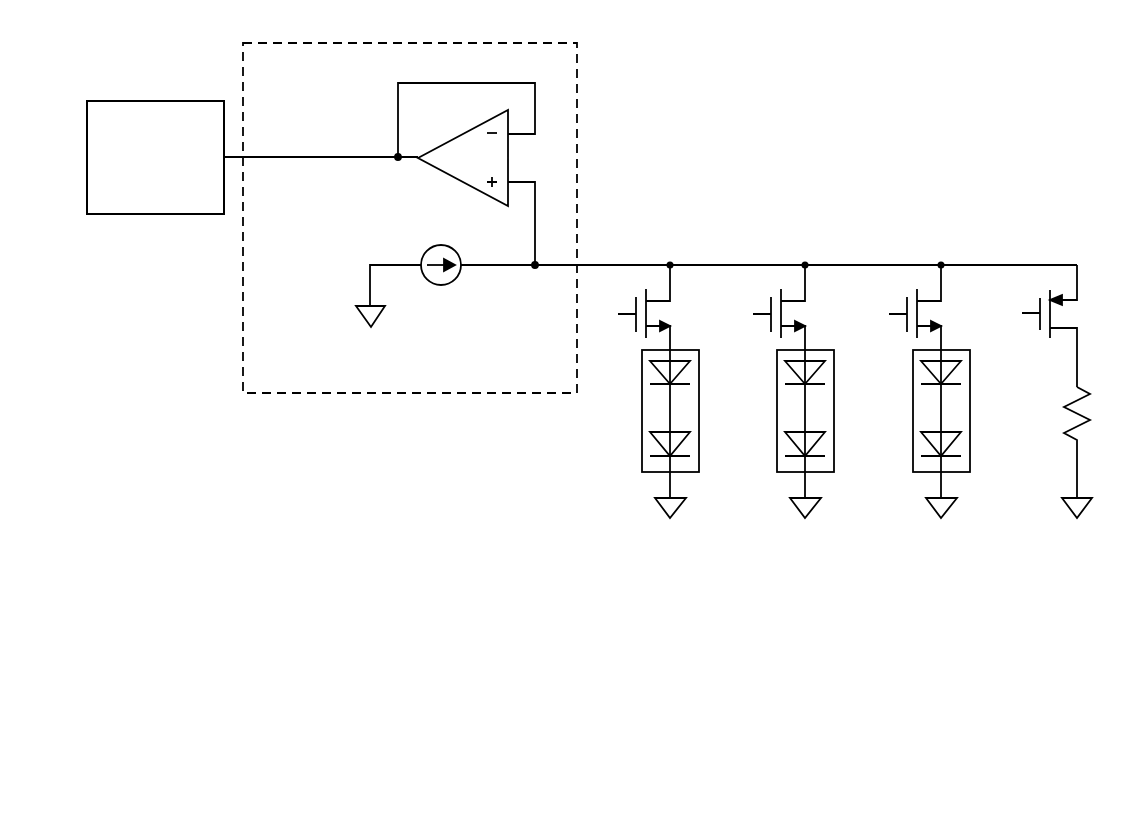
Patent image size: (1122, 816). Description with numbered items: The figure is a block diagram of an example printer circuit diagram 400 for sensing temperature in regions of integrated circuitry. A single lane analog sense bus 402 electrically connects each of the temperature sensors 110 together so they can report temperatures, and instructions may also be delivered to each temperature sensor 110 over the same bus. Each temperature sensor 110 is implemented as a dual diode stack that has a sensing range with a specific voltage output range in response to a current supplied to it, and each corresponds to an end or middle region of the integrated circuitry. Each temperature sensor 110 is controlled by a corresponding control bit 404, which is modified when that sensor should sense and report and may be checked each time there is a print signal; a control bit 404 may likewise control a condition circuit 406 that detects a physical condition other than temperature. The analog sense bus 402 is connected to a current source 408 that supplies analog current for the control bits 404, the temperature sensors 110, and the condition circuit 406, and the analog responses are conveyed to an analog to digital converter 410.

The printer circuit diagram 400 is at (687, 683).
The single lane analog sense bus 402 is at (852, 263).
The control bit 404 is at (1022, 300).
The condition circuit 406 is at (1065, 415).
The current source 408 is at (439, 286).
The analog to digital converter 410 is at (156, 101).
The temperature sensor 110 is at (642, 447).